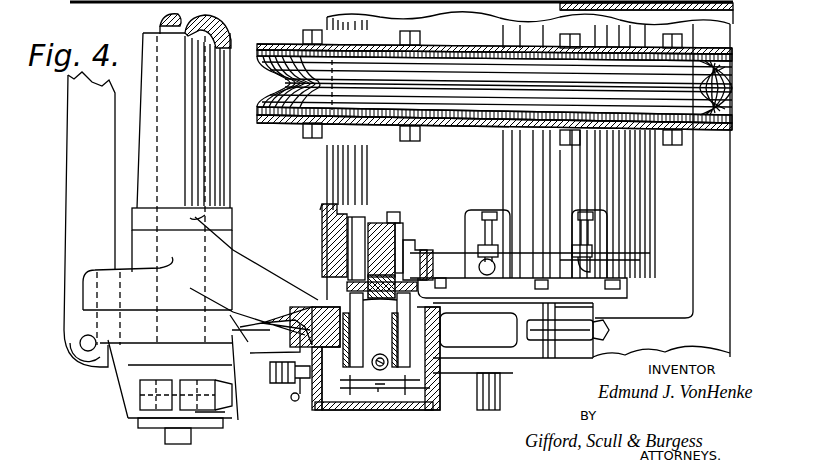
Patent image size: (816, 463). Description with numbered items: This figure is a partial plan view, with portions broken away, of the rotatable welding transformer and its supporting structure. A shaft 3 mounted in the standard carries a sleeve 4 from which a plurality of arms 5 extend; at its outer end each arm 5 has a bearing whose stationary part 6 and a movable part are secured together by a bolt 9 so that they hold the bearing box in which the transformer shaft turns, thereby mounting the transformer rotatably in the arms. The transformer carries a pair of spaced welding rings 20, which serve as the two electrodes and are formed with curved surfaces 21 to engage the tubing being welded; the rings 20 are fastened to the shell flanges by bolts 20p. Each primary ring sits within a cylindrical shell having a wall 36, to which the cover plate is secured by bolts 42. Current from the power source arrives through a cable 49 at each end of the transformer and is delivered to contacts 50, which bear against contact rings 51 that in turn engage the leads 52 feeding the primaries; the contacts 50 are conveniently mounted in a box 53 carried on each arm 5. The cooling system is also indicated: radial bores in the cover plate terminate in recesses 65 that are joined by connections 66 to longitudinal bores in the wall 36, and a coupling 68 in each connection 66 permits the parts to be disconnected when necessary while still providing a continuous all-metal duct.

The shaft 3 is at (162, 31).
The sleeve 4 is at (148, 140).
The arm 5 is at (258, 278).
The stationary part of bearing 6 is at (523, 355).
The bolt 9 is at (572, 337).
The welding ring 20 is at (735, 56).
The bolt 20p is at (497, 40).
The curved surface 21 is at (715, 100).
The wall 36 is at (321, 209).
The bolt 42 is at (625, 291).
The cable 49 is at (282, 393).
The contact 50 is at (350, 302).
The contact ring 51 is at (345, 283).
The lead 52 is at (350, 228).
The box 53 is at (405, 412).
The recess 65 is at (468, 212).
The connection 66 is at (489, 278).
The coupling 68 is at (570, 258).